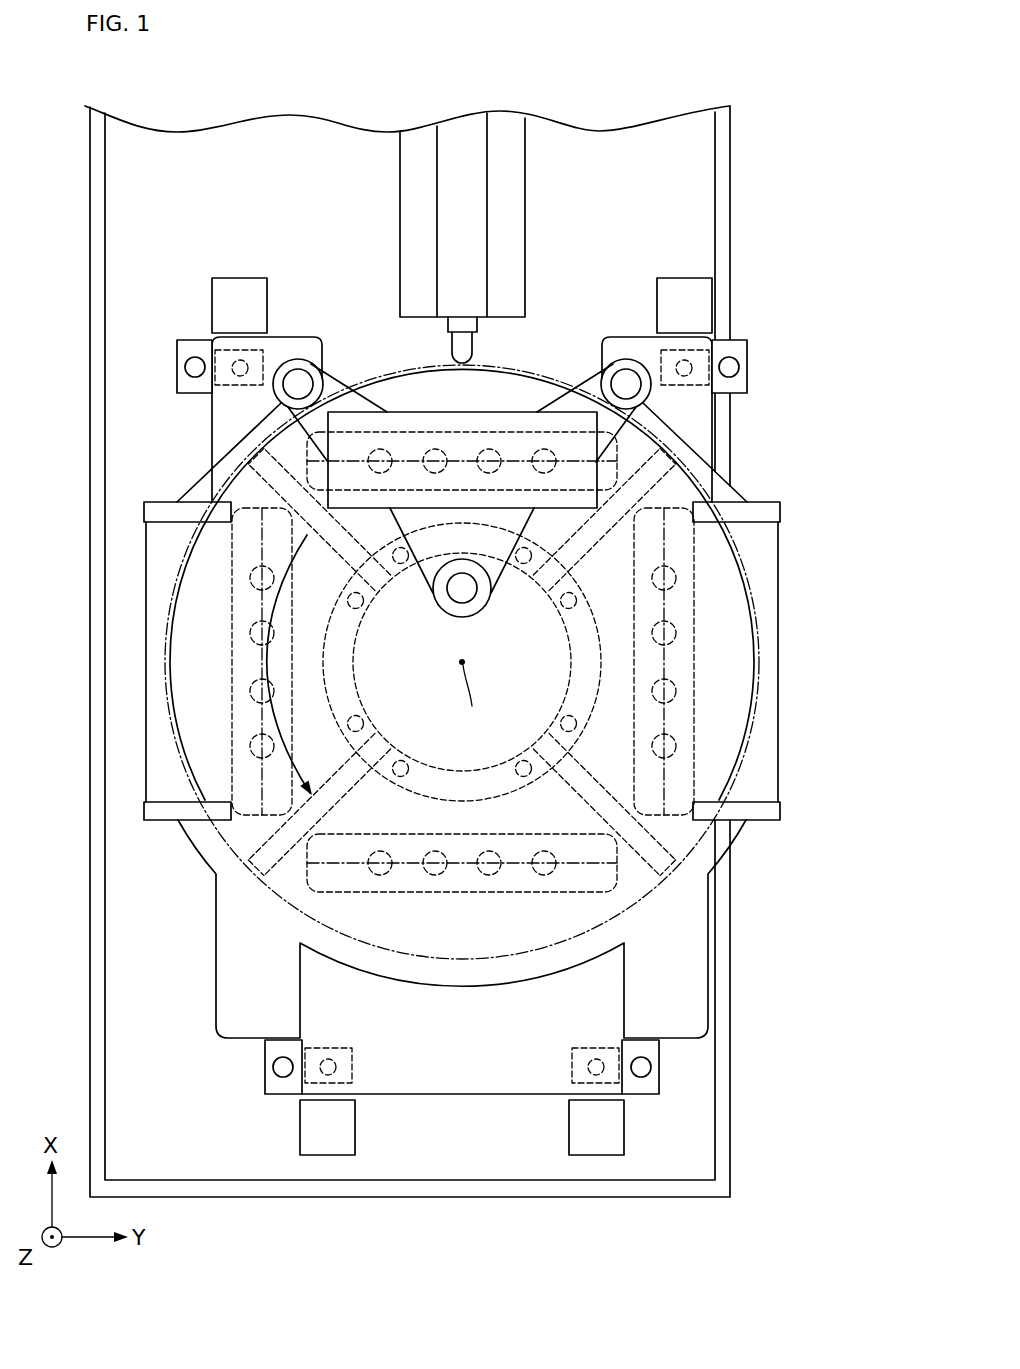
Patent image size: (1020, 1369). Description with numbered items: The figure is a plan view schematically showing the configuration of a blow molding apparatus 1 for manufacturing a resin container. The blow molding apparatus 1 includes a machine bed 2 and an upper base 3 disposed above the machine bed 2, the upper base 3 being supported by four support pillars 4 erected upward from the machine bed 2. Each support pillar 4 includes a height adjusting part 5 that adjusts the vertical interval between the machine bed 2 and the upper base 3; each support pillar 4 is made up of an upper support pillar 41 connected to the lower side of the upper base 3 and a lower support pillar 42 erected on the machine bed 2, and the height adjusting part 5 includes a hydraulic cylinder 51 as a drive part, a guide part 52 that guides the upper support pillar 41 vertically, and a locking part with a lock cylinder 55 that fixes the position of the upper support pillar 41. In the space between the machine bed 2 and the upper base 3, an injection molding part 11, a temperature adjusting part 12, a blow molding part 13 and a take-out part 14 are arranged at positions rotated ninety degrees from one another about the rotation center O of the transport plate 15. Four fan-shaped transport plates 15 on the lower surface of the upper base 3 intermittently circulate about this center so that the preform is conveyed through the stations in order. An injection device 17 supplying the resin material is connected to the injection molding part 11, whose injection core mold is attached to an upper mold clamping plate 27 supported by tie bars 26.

The blow molding apparatus 1 is at (695, 70).
The machine bed 2 is at (702, 152).
The upper base 3 is at (715, 966).
The support pillar 4 is at (230, 400).
The height adjusting part 5 is at (503, 681).
The injection molding part 11 is at (380, 352).
The temperature adjusting part 12 is at (142, 763).
The blow molding part 13 is at (459, 986).
The take-out part 14 is at (792, 752).
The transport plate 15 is at (522, 372).
The injection device 17 is at (525, 176).
The tie bar 26 is at (296, 357).
The upper mold clamping plate 27 is at (346, 510).
The upper support pillar 41 is at (237, 386).
The lower support pillar 42 is at (492, 726).
The hydraulic cylinder 51 is at (222, 358).
The guide part 52 is at (197, 340).
The lock cylinder 55 is at (235, 278).